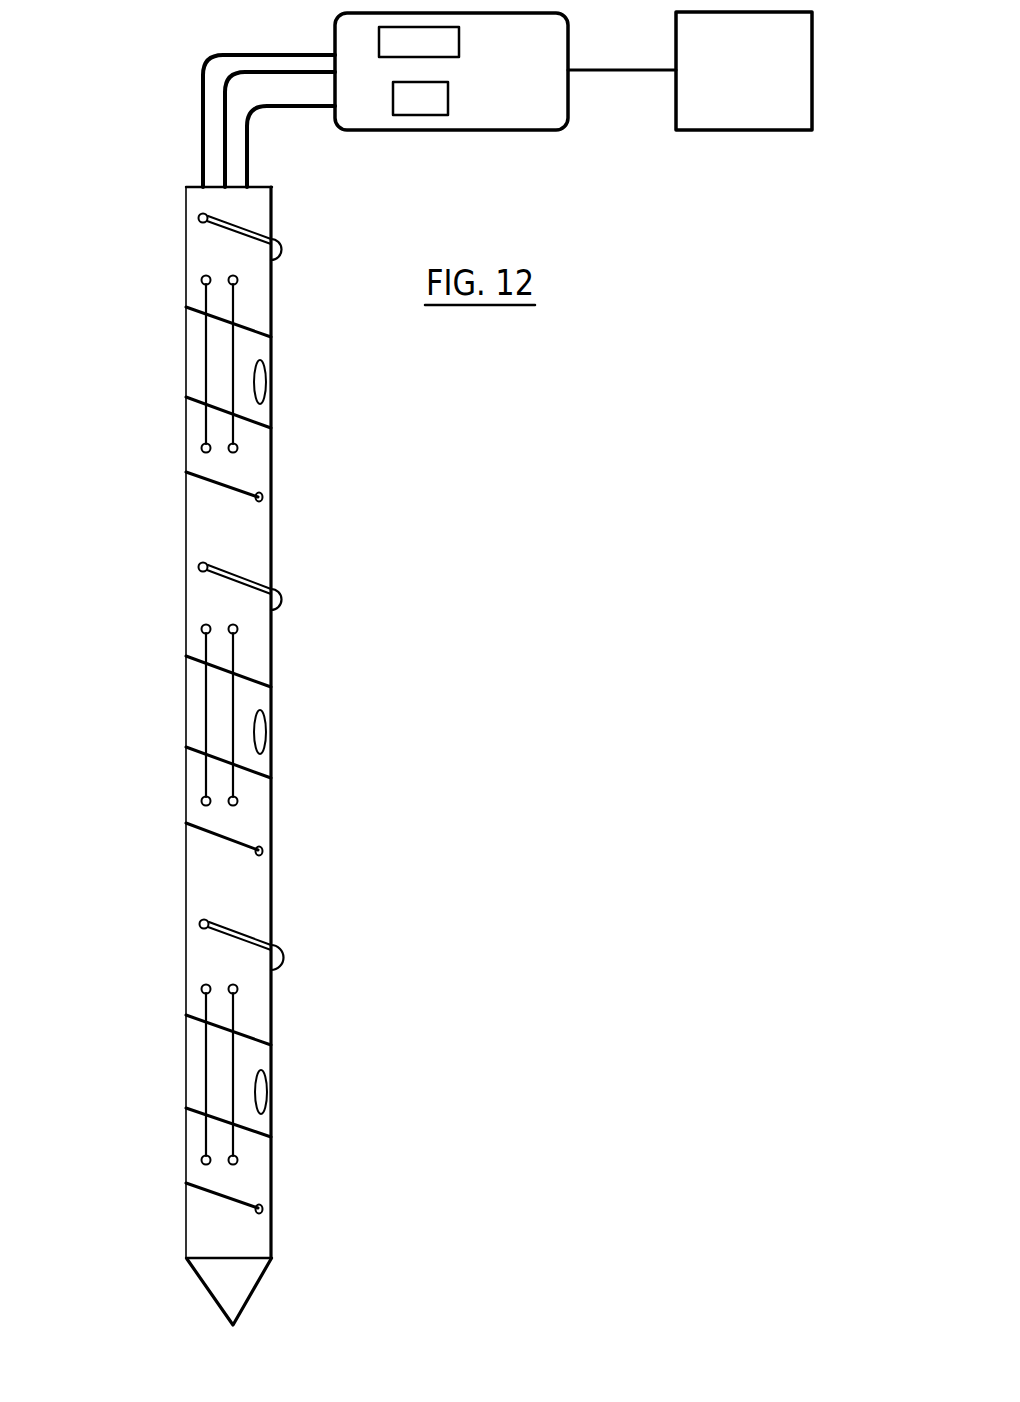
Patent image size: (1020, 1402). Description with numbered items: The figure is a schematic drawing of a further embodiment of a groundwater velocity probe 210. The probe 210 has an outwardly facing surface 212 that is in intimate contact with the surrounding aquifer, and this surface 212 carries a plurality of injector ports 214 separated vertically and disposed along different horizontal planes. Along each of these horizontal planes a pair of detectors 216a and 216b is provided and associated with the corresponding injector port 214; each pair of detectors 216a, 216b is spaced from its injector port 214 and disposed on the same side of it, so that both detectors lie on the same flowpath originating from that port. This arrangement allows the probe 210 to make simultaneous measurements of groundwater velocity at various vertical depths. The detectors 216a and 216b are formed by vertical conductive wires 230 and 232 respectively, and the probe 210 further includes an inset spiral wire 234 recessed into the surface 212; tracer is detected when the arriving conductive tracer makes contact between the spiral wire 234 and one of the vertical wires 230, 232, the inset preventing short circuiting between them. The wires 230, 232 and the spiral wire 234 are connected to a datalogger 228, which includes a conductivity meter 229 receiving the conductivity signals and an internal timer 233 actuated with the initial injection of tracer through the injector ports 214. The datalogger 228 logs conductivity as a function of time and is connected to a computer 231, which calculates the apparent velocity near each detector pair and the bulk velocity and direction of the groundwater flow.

The probe 210 is at (277, 690).
The outwardly facing surface 212 is at (250, 898).
The injector port 214 is at (263, 381).
The detector 216a is at (197, 346).
The detector 216b is at (248, 345).
The datalogger 228 is at (473, 120).
The conductivity meter 229 is at (449, 98).
The vertical conductive wire 230 is at (207, 418).
The computer 231 is at (768, 87).
The vertical conductive wire 232 is at (233, 373).
The internal timer 233 is at (460, 43).
The inset spiral wire 234 is at (203, 118).